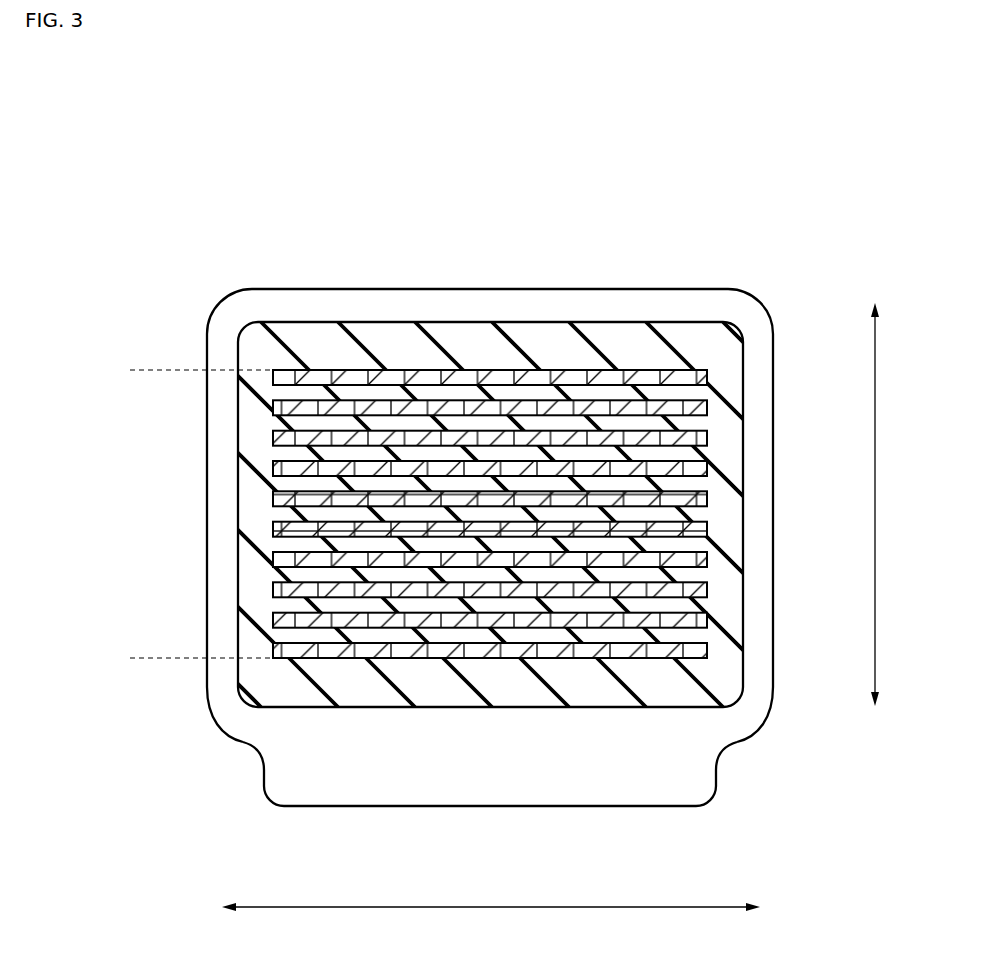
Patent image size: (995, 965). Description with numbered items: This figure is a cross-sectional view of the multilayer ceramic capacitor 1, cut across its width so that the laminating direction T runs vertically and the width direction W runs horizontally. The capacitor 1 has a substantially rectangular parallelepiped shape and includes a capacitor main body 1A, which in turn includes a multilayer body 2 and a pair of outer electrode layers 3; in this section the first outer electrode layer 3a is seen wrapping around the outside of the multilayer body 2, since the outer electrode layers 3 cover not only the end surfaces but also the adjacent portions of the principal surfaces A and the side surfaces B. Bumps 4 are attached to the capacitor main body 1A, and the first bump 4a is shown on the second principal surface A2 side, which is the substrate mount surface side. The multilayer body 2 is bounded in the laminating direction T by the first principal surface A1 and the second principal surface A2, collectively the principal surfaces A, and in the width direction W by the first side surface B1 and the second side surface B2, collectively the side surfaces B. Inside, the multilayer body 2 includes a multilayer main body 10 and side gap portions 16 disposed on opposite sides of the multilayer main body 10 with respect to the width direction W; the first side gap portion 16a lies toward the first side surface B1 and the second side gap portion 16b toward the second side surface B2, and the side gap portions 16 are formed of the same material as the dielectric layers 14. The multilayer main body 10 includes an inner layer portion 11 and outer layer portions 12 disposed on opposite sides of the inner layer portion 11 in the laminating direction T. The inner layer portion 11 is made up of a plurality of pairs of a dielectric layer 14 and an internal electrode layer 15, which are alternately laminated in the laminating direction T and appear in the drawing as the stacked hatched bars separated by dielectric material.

The multilayer ceramic capacitor 1 is at (700, 260).
The capacitor main body 1A is at (448, 228).
The multilayer body 2 is at (438, 321).
The outer electrode layers 3 is at (490, 481).
The first outer electrode layer 3a is at (367, 303).
The bumps 4 is at (490, 807).
The first bump 4a is at (420, 777).
The multilayer main body 10 is at (80, 322).
The inner layer portion 11 is at (122, 370).
The outer layer portions 12 is at (302, 345).
The dielectric layer 14 is at (273, 425).
The internal electrode layer 15 is at (282, 378).
The side gap portions 16 is at (506, 292).
The first side gap portion 16a is at (256, 340).
The second side gap portion 16b is at (727, 340).
The principal surfaces A is at (490, 545).
The first principal surface A1 is at (550, 322).
The second principal surface A2 is at (547, 707).
The side surfaces B is at (493, 514).
The first side surface B1 is at (238, 597).
The second side surface B2 is at (743, 593).
The laminating direction T is at (883, 504).
The width direction W is at (491, 918).